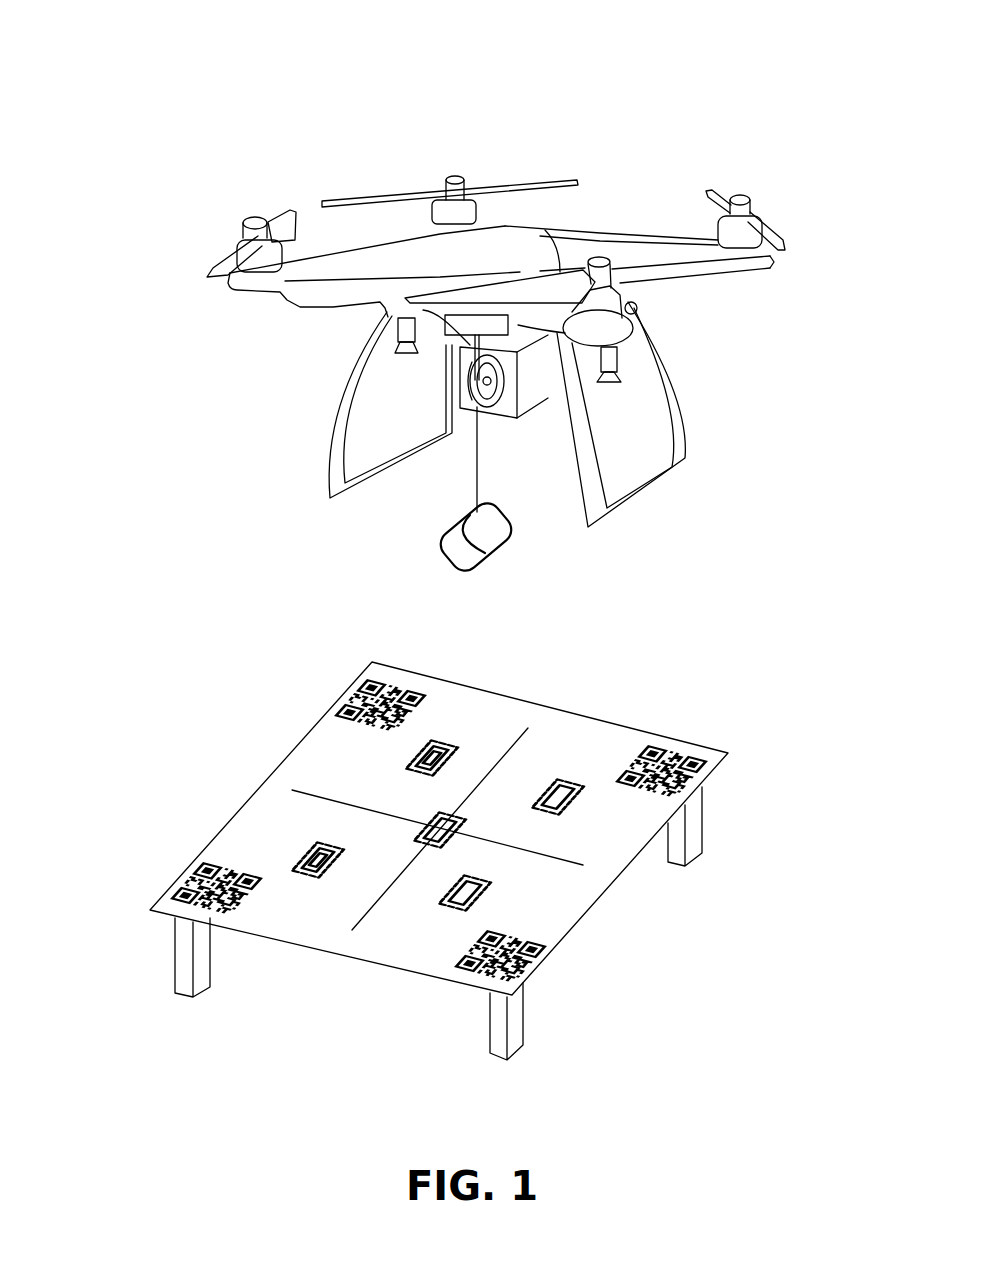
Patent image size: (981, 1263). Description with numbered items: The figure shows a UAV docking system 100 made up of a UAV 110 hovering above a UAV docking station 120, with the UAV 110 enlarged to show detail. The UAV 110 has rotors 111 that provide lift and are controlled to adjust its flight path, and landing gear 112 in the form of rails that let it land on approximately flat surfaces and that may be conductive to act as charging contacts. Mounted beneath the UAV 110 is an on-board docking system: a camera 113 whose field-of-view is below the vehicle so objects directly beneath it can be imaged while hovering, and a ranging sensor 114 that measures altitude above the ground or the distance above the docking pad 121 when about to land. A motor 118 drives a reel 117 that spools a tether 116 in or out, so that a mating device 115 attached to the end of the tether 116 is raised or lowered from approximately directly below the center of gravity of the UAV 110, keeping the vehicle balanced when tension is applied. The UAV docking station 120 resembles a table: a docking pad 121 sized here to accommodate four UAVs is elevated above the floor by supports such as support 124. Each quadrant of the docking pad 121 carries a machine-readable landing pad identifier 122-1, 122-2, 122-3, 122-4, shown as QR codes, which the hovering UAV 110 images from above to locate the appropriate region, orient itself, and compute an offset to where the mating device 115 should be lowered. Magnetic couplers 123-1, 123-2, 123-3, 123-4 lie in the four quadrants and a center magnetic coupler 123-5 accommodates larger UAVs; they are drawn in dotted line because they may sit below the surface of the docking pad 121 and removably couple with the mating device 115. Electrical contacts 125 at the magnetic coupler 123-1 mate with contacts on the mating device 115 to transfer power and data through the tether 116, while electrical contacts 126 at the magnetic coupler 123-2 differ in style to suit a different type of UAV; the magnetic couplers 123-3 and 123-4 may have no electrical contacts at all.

The UAV docking system 100 is at (76, 56).
The UAV 110 is at (270, 156).
The rotors 111 is at (344, 196).
The landing gear 112 is at (334, 441).
The camera 113 is at (392, 330).
The ranging sensor 114 is at (622, 360).
The mating device 115 is at (441, 537).
The tether 116 is at (480, 456).
The reel 117 is at (499, 406).
The motor 118 is at (474, 314).
The UAV docking station 120 is at (168, 688).
The docking pad 121 is at (284, 757).
The landing pad identifier 122-1 is at (364, 680).
The landing pad identifier 122-2 is at (200, 862).
The landing pad identifier 122-3 is at (540, 950).
The landing pad identifier 122-4 is at (655, 746).
The magnetic coupler 123-1 is at (414, 768).
The magnetic coupler 123-2 is at (318, 878).
The magnetic coupler 123-3 is at (452, 905).
The magnetic coupler 123-4 is at (556, 812).
The center magnetic coupler 123-5 is at (457, 832).
The support 124 is at (175, 973).
The electrical contacts 125 is at (422, 758).
The electrical contacts 126 is at (311, 856).